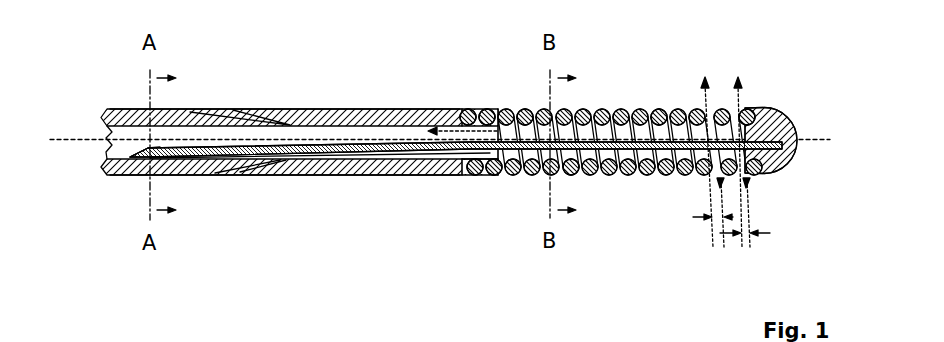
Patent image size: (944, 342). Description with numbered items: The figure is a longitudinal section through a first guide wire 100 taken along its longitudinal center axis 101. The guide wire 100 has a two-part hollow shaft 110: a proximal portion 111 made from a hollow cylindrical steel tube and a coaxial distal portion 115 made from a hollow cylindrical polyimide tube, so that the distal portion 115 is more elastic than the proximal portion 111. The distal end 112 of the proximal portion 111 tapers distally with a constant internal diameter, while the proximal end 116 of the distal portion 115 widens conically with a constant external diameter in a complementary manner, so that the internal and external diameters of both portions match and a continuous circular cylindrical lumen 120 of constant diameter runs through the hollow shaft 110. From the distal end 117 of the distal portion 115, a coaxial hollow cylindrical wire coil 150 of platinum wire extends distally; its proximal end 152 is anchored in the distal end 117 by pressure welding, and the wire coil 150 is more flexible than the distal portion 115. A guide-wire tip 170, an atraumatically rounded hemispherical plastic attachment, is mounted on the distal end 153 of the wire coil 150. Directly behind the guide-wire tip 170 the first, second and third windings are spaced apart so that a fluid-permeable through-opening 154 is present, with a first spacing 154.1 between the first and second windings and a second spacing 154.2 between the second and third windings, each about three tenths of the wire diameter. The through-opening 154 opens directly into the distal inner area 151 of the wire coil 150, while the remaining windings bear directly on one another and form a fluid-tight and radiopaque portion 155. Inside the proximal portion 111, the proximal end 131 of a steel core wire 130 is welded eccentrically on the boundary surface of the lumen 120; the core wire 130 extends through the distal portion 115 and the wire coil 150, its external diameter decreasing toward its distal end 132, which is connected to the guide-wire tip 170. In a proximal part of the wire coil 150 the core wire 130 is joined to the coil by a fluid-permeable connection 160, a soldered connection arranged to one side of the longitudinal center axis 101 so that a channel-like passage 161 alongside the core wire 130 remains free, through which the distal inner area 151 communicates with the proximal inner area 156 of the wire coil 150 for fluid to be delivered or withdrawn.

The guide wire 100 is at (74, 223).
The longitudinal center axis 101 is at (68, 138).
The hollow shaft 110 is at (228, 192).
The proximal portion 111 is at (185, 108).
The distal end of the proximal portion 112 is at (233, 108).
The distal portion 115 is at (355, 174).
The proximal end of the distal portion 116 is at (277, 175).
The distal end of the distal portion 117 is at (467, 177).
The lumen 120 is at (312, 136).
The core wire 130 is at (400, 145).
The proximal end of the core wire 131 is at (140, 150).
The distal end of the core wire 132 is at (777, 130).
The wire coil 150 is at (642, 196).
The distal inner area 151 is at (663, 110).
The proximal end of the wire coil 152 is at (478, 176).
The distal end of the wire coil 153 is at (750, 110).
The through-opening 154 is at (737, 110).
The first spacing 154.1 is at (790, 250).
The second spacing 154.2 is at (717, 220).
The fluid-tight and radiopaque portion 155 is at (620, 98).
The proximal inner area 156 is at (482, 110).
The fluid-permeable connection 160 is at (567, 176).
The channel-like passage 161 is at (532, 110).
The guide-wire tip 170 is at (787, 163).